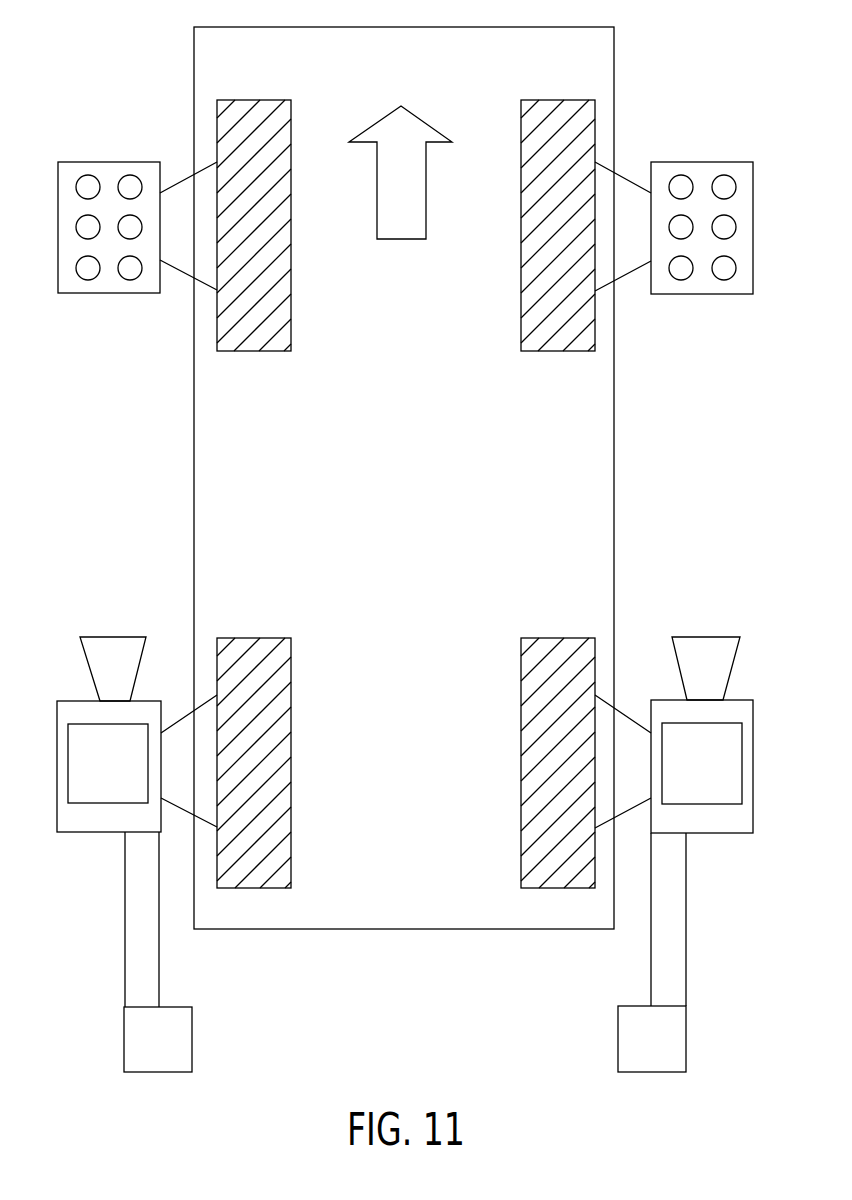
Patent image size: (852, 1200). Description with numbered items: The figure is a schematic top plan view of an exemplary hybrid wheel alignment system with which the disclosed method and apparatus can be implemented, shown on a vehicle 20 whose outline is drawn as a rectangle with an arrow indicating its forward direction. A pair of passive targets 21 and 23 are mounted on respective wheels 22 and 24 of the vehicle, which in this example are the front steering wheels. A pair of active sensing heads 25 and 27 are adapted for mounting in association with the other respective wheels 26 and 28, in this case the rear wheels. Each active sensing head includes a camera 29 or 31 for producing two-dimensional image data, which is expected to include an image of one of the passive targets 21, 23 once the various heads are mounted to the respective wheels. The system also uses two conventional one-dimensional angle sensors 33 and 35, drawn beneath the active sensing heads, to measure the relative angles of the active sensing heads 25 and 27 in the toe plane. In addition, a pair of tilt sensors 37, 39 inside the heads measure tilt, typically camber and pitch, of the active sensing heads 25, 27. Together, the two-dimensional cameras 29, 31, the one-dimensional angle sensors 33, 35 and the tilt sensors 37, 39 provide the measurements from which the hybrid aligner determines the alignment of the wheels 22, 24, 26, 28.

The vehicle 20 is at (194, 470).
The passive target 21 is at (108, 162).
The wheel 22 is at (250, 351).
The passive target 23 is at (698, 162).
The wheel 24 is at (554, 351).
The active sensing head 25 is at (92, 832).
The wheel 26 is at (252, 638).
The active sensing head 27 is at (712, 833).
The wheel 28 is at (556, 638).
The camera 29 is at (115, 637).
The camera 31 is at (707, 637).
The angle sensor 33 is at (193, 1039).
The angle sensor 35 is at (618, 1039).
The tilt sensor 37 is at (68, 762).
The tilt sensor 39 is at (742, 765).